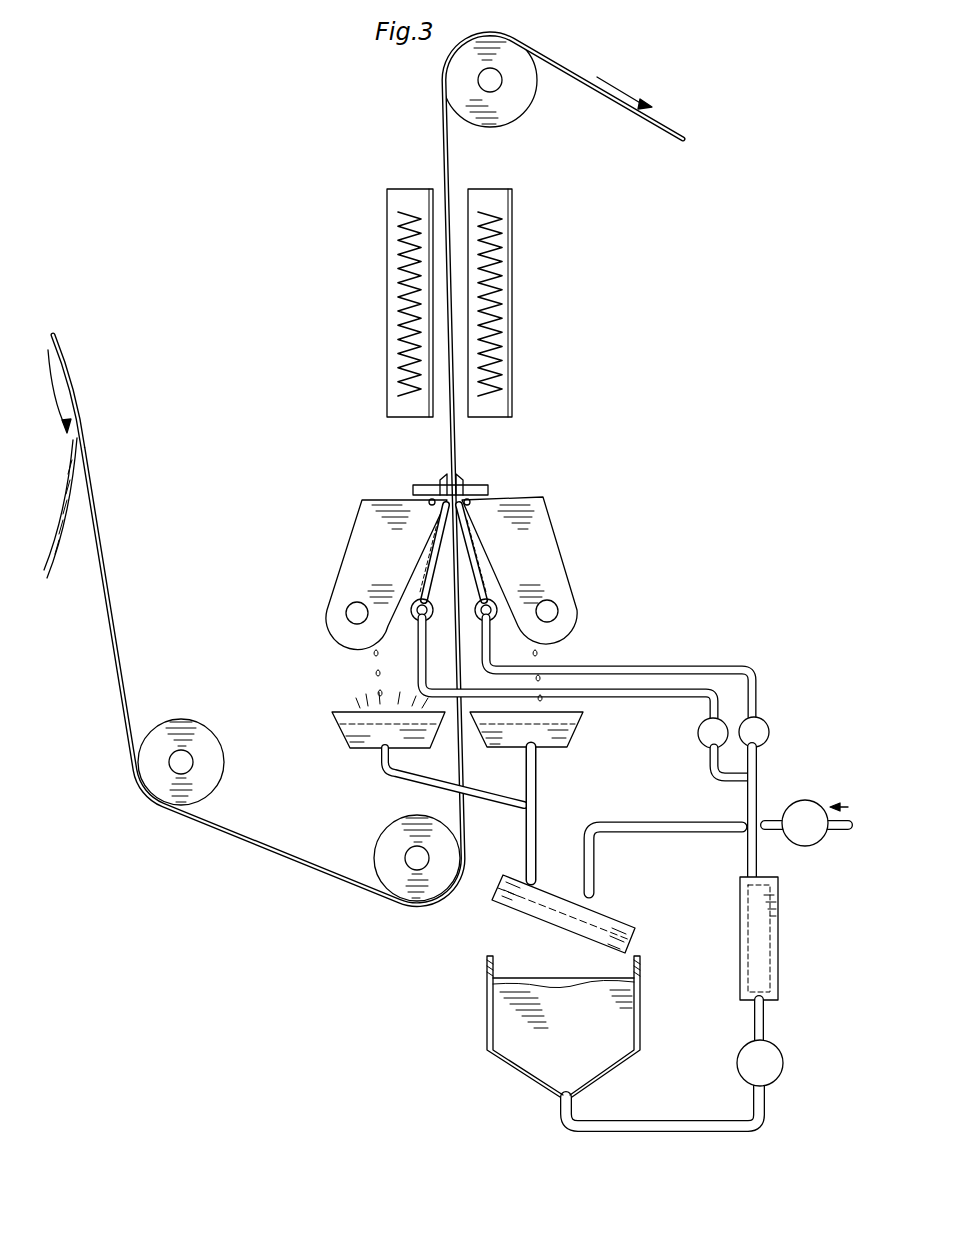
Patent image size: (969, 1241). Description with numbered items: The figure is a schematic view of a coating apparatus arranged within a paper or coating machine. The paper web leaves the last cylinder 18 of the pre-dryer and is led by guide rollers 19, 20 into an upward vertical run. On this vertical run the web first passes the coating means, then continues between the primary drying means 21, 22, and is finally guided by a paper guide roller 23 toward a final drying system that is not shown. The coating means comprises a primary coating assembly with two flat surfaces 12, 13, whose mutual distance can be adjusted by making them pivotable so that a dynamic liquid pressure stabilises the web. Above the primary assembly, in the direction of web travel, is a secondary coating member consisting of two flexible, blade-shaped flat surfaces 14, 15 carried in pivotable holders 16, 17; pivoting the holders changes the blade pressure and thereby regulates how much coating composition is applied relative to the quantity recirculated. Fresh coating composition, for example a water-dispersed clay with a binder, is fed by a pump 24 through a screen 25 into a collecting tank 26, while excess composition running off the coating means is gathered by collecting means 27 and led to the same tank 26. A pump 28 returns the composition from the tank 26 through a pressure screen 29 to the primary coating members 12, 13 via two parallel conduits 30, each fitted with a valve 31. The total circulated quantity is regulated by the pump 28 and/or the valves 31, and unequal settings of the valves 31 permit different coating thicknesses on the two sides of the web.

The flat surface 12 is at (435, 557).
The flat surface 13 is at (460, 558).
The blade-shaped flat surface 14 is at (445, 482).
The blade-shaped flat surface 15 is at (458, 482).
The pivotable holder 16 is at (353, 560).
The pivotable holder 17 is at (550, 573).
The last cylinder 18 is at (67, 355).
The guide roller 19 is at (207, 740).
The guide roller 20 is at (417, 890).
The primary drying means 21 is at (393, 322).
The primary drying means 22 is at (510, 310).
The paper guide roller 23 is at (521, 95).
The pump 24 is at (810, 840).
The screen 25 is at (538, 907).
The collecting tank 26 is at (503, 1030).
The collecting means 27 is at (383, 733).
The pump 28 is at (773, 1055).
The pressure screen 29 is at (773, 960).
The parallel conduits 30 is at (723, 780).
The valve 31 is at (712, 733).